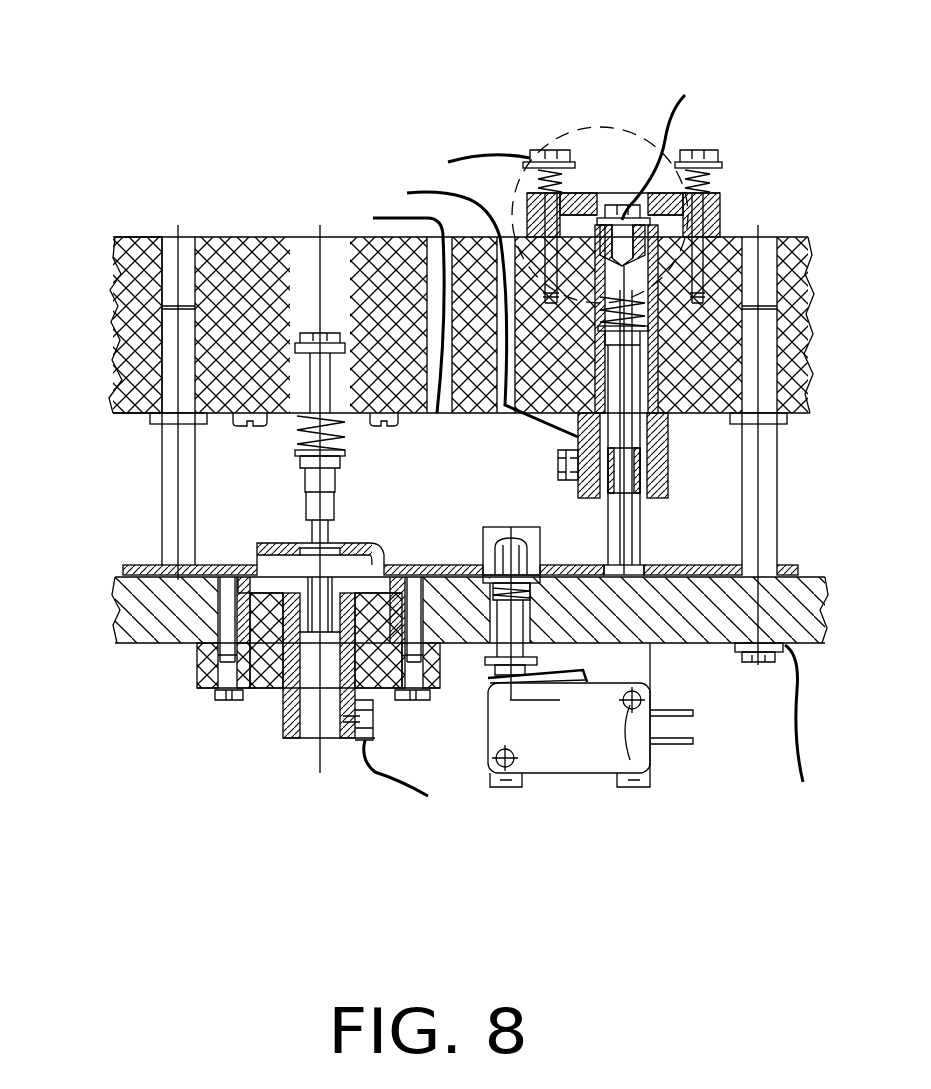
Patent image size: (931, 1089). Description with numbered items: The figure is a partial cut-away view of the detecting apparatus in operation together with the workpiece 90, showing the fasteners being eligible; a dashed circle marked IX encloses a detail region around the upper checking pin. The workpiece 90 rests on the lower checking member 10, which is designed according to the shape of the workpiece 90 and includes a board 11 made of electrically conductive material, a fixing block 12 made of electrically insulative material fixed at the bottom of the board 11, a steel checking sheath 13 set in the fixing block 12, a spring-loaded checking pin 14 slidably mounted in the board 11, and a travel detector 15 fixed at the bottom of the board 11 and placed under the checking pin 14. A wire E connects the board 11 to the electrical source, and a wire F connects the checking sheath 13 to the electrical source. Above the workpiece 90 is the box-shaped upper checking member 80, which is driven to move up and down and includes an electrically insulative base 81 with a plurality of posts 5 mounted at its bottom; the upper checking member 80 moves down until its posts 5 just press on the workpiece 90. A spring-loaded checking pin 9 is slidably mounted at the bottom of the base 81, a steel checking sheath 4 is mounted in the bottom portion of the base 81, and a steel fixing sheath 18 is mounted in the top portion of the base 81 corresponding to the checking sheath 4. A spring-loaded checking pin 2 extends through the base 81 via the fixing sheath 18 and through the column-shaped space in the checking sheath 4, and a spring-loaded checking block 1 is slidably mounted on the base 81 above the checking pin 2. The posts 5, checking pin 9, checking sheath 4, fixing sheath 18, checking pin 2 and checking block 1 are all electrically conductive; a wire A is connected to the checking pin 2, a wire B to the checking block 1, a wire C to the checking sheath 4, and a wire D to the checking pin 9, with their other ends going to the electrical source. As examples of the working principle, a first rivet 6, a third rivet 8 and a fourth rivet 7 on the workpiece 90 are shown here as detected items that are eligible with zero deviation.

The checking block 1 is at (587, 215).
The checking pin 2 is at (738, 245).
The checking sheath 4 is at (663, 442).
The posts 5 is at (188, 470).
The first rivet 6 is at (630, 535).
The fourth rivet 7 is at (327, 563).
The third rivet 8 is at (495, 535).
The checking pin 9 is at (312, 514).
The lower checking member 10 is at (112, 612).
The board 11 is at (125, 620).
The fixing block 12 is at (207, 692).
The checking sheath 13 is at (292, 738).
The checking pin 14 is at (483, 652).
The travel detector 15 is at (645, 705).
The fixing sheath 18 is at (583, 162).
The upper checking member 80 is at (97, 270).
The base 81 is at (133, 250).
The workpiece 90 is at (136, 567).
The wire A is at (692, 100).
The wire B is at (440, 150).
The wire C is at (395, 185).
The wire D is at (370, 210).
The wire E is at (812, 722).
The wire F is at (406, 798).
The detail section IX is at (600, 128).